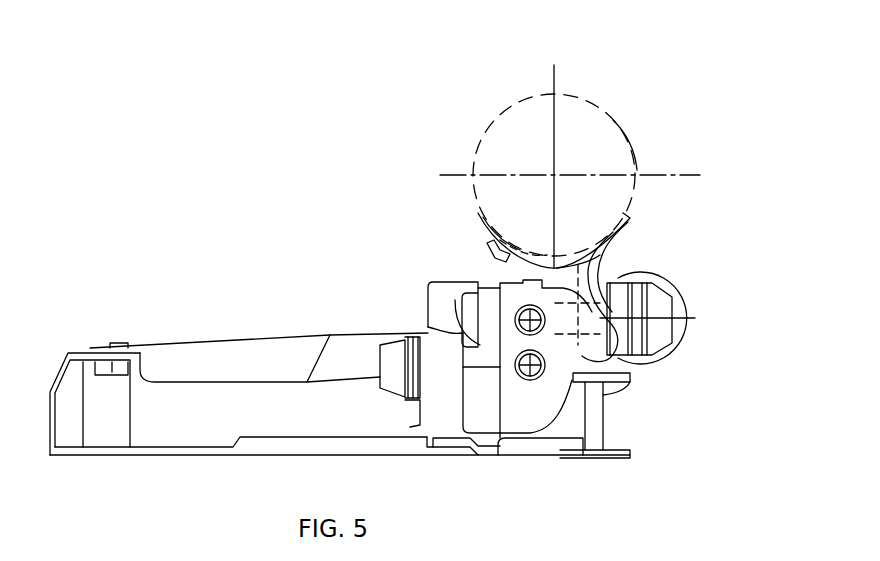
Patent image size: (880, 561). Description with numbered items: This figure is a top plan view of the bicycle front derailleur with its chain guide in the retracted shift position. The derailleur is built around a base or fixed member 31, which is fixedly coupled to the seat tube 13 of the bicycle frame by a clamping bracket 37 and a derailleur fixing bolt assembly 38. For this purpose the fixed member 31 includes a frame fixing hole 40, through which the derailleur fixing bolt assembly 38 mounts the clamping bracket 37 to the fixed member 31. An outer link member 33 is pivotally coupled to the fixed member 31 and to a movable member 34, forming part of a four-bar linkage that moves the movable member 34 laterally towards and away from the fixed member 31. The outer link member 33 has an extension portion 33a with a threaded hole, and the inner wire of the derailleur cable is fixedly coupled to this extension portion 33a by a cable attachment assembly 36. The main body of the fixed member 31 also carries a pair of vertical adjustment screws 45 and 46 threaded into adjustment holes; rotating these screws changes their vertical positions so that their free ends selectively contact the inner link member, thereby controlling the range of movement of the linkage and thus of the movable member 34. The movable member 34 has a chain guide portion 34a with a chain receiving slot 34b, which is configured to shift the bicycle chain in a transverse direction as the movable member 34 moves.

The seat tube 13 is at (622, 118).
The fixed member 31 is at (493, 310).
The outer link member 33 is at (478, 453).
The extension portion 33a is at (462, 325).
The movable member 34 is at (228, 342).
The chain guide portion 34a is at (277, 455).
The chain receiving slot 34b is at (140, 415).
The cable attachment assembly 36 is at (390, 397).
The clamping bracket 37 is at (620, 230).
The derailleur fixing bolt assembly 38 is at (670, 287).
The frame fixing hole 40 is at (577, 258).
The vertical adjustment screw 45 is at (545, 378).
The vertical adjustment screw 46 is at (472, 322).